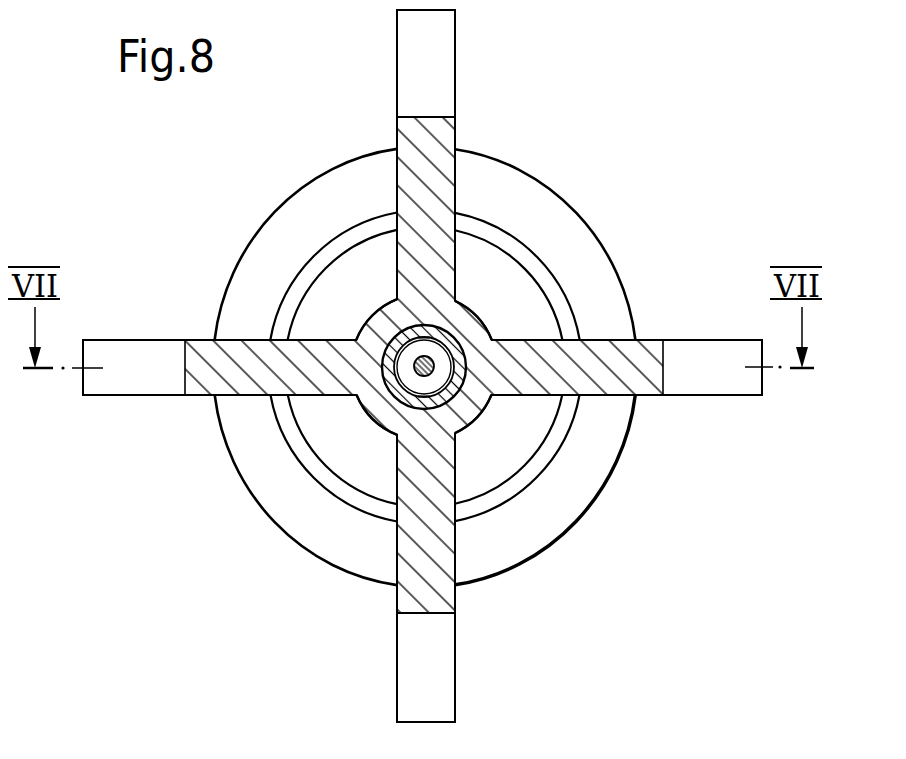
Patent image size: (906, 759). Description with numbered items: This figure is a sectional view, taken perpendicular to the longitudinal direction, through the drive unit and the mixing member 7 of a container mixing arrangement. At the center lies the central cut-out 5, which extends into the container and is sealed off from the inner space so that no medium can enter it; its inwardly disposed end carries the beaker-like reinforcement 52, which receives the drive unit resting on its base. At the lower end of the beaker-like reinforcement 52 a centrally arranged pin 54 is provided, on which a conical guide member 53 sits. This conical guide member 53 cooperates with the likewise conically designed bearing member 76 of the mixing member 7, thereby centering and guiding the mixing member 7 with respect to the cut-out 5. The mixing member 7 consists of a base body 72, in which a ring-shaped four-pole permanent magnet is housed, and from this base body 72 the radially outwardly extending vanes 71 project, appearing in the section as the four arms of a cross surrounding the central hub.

The central cut-out 5 is at (525, 188).
The beaker-like reinforcement 52 is at (510, 297).
The mixing member 7 is at (485, 337).
The vanes 71 is at (443, 77).
The bearing member 76 is at (382, 330).
The base body 72 is at (472, 405).
The conical guide member 53 is at (396, 396).
The pin 54 is at (458, 400).